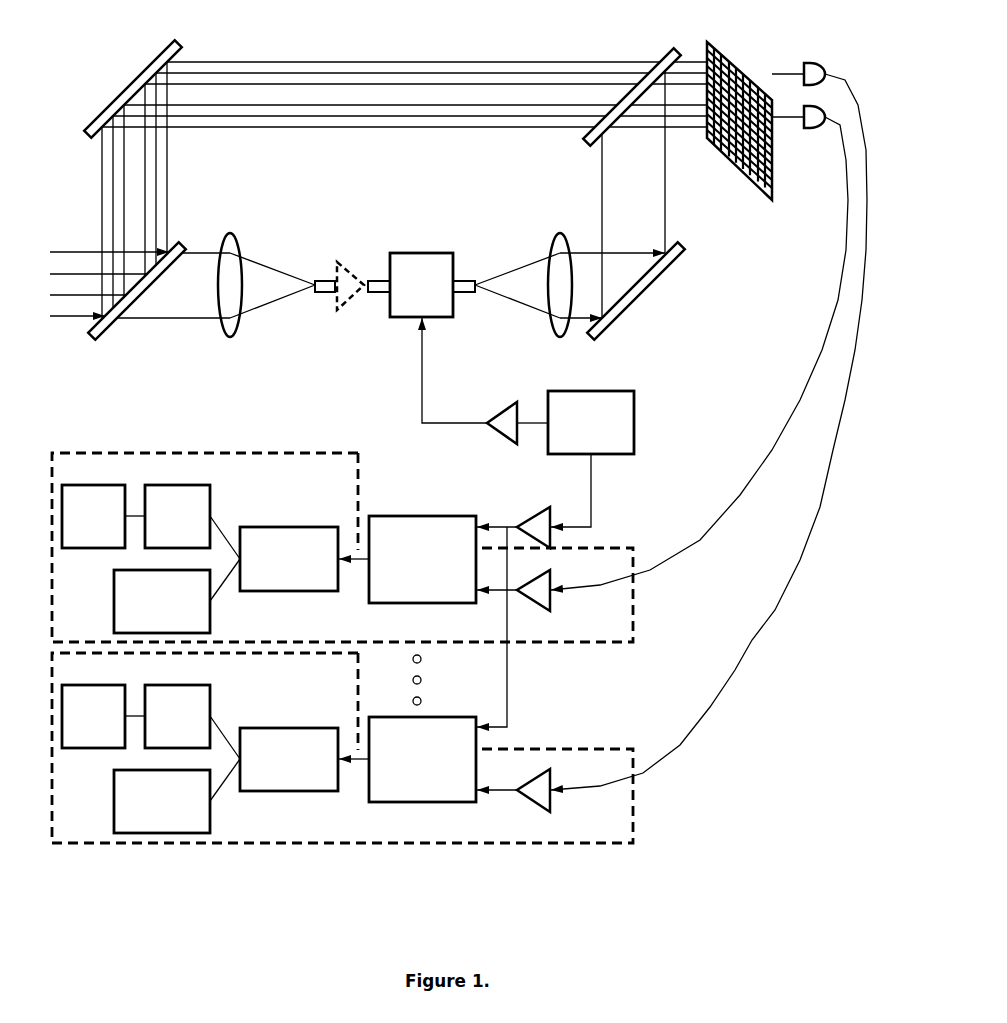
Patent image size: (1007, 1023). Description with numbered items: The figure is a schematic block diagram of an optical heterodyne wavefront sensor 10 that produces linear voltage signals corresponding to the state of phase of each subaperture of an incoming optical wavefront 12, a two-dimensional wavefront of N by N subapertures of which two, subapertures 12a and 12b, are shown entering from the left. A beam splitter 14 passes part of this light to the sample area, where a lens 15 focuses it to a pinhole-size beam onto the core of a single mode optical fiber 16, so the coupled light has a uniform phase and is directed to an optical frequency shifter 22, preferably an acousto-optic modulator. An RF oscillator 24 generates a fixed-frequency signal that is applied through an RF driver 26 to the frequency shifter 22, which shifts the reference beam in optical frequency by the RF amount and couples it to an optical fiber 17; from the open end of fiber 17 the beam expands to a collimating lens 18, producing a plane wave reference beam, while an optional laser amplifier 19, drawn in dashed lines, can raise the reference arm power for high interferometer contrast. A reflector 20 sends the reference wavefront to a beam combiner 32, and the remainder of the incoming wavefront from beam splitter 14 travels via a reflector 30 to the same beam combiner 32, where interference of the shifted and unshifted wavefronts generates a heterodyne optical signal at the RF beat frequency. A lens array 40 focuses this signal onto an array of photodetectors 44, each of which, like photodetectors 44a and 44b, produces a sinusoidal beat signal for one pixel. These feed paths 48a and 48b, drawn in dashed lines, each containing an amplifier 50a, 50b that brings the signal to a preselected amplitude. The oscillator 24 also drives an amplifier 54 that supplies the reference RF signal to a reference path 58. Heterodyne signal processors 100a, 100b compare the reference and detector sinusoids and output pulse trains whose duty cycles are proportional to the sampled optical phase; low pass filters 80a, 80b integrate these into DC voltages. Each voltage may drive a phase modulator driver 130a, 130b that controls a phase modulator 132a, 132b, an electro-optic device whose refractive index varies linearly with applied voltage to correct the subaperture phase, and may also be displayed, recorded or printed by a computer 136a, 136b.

The optical heterodyne wavefront sensor 10 is at (381, 44).
The optical wavefront 12 is at (67, 229).
The subaperture 12a is at (49, 317).
The subaperture 12b is at (50, 253).
The beam splitter 14 is at (110, 333).
The lens 15 is at (233, 333).
The single mode optical fiber 16 is at (327, 294).
The optical fiber 17 is at (459, 294).
The collimating lens 18 is at (552, 332).
The laser amplifier 19 is at (350, 286).
The reflector 20 is at (628, 320).
The optical frequency shifter 22 is at (410, 285).
The RF oscillator 24 is at (575, 459).
The RF driver 26 is at (499, 414).
The reflector 30 is at (156, 57).
The beam combiner 32 is at (665, 53).
The lens array 40 is at (722, 60).
The array of photodetectors 44 is at (813, 48).
The photodetector 44a is at (810, 130).
The photodetector 44b is at (822, 68).
The path 48a is at (593, 645).
The path 48b is at (593, 846).
The amplifier 50a is at (538, 607).
The amplifier 50b is at (542, 812).
The amplifier 54 is at (532, 512).
The reference path 58 is at (483, 512).
The low pass filter 80a is at (289, 559).
The low pass filter 80b is at (289, 759).
The heterodyne signal processor 100a is at (407, 559).
The heterodyne signal processor 100b is at (407, 759).
The phase modulator driver 130a is at (192, 522).
The phase modulator driver 130b is at (192, 722).
The phase modulator 132a is at (103, 516).
The phase modulator 132b is at (103, 716).
The computer 136a is at (177, 596).
The computer 136b is at (177, 796).